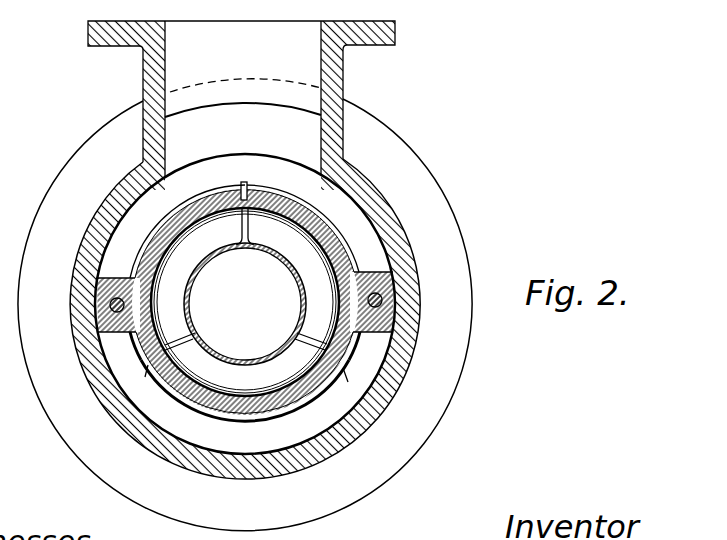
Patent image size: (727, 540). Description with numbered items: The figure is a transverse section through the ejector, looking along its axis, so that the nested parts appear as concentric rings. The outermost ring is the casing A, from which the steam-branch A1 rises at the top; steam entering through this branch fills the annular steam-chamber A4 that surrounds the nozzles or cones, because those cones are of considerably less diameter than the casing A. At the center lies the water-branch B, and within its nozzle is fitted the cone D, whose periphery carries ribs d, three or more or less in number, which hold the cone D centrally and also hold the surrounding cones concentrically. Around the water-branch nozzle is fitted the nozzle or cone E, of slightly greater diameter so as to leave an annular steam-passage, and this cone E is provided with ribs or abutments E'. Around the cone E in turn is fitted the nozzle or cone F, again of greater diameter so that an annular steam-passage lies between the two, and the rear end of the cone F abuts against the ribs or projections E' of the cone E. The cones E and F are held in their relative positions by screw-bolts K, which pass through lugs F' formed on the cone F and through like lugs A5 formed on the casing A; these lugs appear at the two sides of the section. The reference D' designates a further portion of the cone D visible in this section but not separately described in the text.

The casing A is at (363, 270).
The steam-branch A1 is at (241, 99).
The annular steam-chamber A4 is at (245, 291).
The lugs A5 is at (103, 280).
The water-branch B is at (248, 315).
The cone D is at (245, 256).
The segment D' is at (245, 335).
The ribs d is at (245, 289).
The nozzle or cone E is at (300, 220).
The ribs or abutments E' is at (241, 289).
The nozzle or cone F is at (245, 315).
The lugs F' is at (249, 306).
The screw-bolts K is at (108, 306).